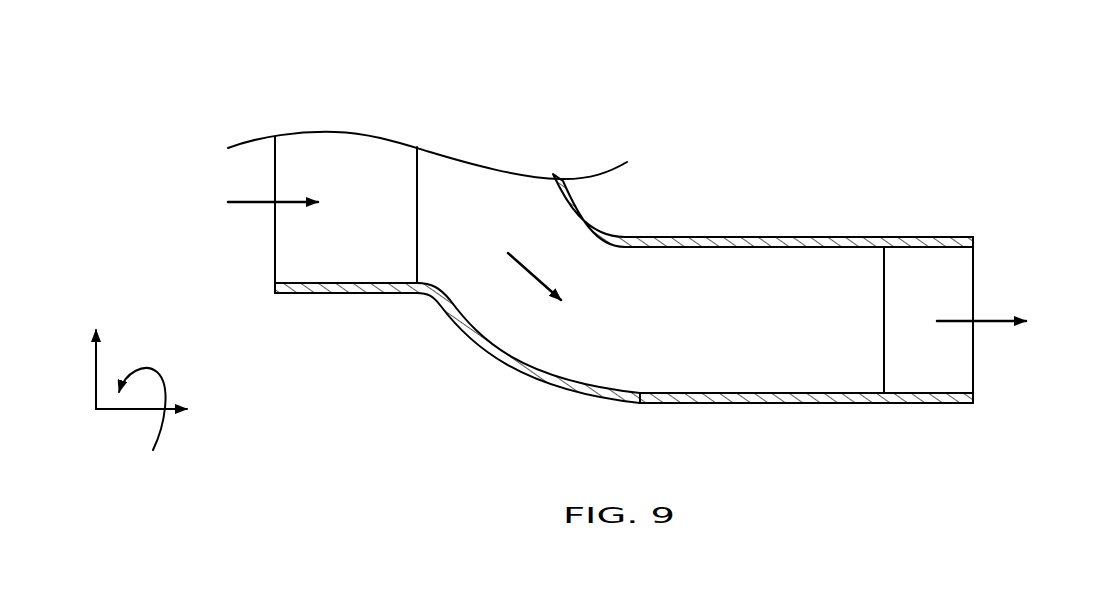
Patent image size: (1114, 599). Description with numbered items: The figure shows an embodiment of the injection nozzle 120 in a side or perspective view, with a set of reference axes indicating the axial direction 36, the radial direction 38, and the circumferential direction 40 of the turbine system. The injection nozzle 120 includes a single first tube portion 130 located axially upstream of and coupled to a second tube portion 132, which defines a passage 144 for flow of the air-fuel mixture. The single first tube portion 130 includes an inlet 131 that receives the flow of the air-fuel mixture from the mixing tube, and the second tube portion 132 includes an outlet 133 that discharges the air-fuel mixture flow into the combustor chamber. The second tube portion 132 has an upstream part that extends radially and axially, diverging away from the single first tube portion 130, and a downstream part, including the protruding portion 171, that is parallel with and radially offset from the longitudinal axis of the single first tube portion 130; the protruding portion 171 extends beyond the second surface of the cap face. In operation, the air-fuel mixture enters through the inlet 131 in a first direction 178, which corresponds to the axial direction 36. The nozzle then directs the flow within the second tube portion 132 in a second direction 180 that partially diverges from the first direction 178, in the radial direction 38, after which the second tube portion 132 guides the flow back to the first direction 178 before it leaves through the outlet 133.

The injection nozzle 120 is at (150, 167).
The single first tube portion 130 is at (345, 147).
The inlet 131 is at (275, 252).
The second tube portion 132 is at (660, 403).
The outlet 133 is at (975, 263).
The passage 144 is at (545, 385).
The protruding portion 171 is at (922, 403).
The first direction 178 is at (262, 200).
The second direction 180 is at (537, 275).
The axial direction 36 is at (132, 410).
The radial direction 38 is at (97, 372).
The circumferential direction 40 is at (167, 427).